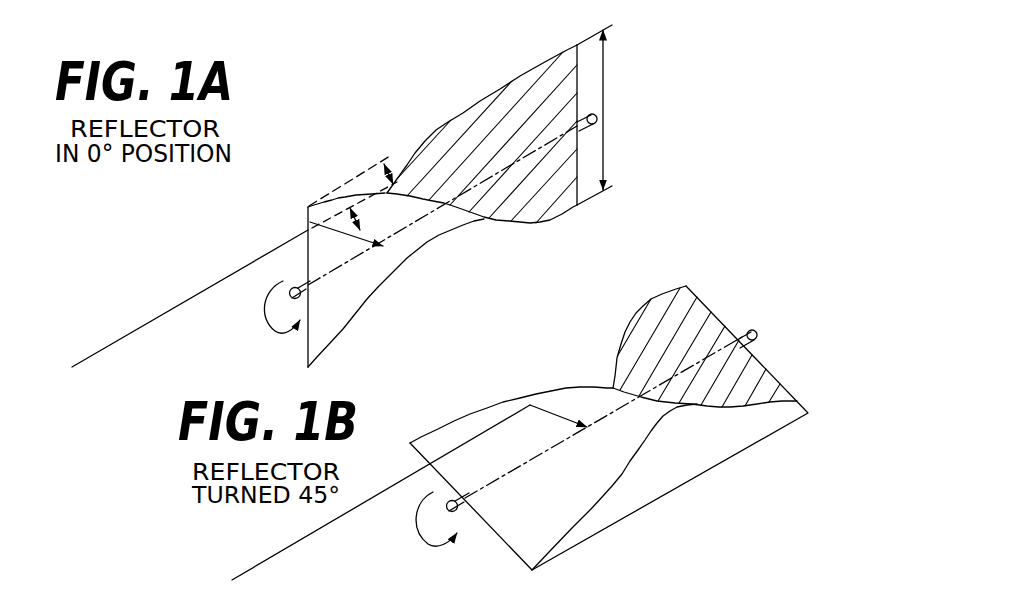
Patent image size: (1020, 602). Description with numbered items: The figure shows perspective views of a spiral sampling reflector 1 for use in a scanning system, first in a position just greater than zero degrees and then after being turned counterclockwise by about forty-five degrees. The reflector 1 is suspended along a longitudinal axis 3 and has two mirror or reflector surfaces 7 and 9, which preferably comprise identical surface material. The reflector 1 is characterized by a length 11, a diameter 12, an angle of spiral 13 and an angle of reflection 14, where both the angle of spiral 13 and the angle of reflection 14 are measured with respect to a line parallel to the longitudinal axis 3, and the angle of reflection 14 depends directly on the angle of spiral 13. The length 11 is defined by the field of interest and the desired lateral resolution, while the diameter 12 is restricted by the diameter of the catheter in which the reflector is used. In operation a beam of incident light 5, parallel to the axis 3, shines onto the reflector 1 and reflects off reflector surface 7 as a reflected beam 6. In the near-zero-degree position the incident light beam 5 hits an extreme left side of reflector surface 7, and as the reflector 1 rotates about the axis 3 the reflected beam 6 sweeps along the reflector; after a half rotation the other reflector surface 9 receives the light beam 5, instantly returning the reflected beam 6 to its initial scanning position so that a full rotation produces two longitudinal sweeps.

In FIG. 1A, the spiral sampling reflector 1 is at (471, 104).
In FIG. 1A, the longitudinal axis 3 is at (356, 257).
In FIG. 1A, the beam of incident light 5 is at (301, 240).
In FIG. 1A, the reflected beam 6 is at (309, 344).
In FIG. 1A, the reflector surface 7 is at (399, 253).
In FIG. 1A, the reflector surface 9 is at (538, 209).
In FIG. 1B, the length 11 is at (697, 479).
In FIG. 1A, the diameter 12 is at (604, 86).
In FIG. 1A, the angle of spiral 13 is at (390, 174).
In FIG. 1A, the angle of reflection 14 is at (356, 218).